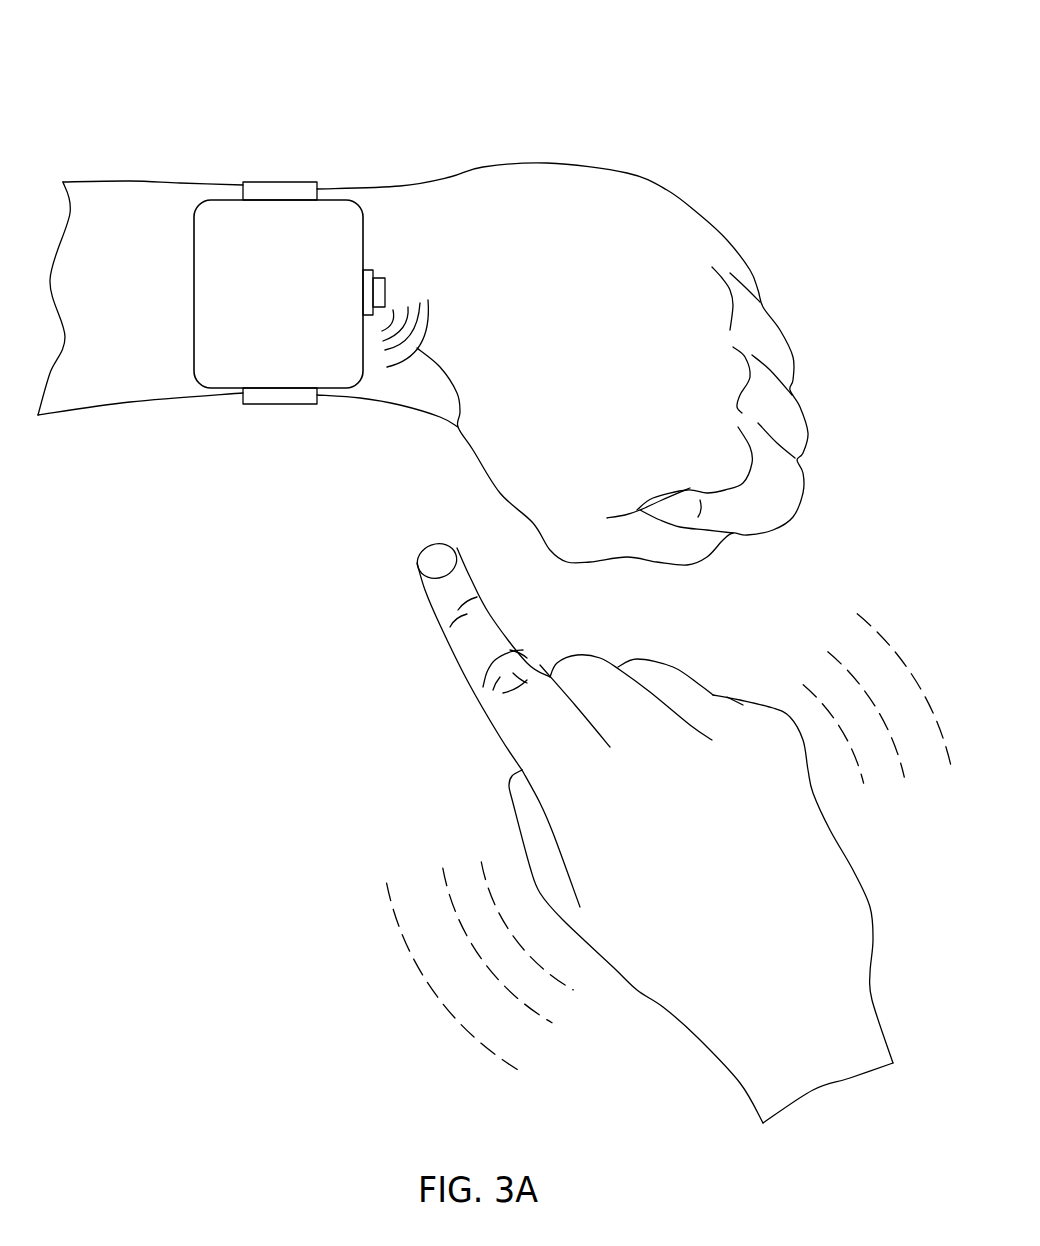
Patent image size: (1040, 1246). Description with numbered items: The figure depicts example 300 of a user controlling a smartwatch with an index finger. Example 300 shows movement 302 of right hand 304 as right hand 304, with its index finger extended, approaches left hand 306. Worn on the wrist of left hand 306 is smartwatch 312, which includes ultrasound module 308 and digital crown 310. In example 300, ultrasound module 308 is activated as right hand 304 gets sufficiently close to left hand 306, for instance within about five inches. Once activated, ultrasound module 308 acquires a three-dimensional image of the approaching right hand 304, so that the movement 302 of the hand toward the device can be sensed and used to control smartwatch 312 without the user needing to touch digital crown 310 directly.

The example 300 is at (214, 87).
The movement 302 is at (425, 977).
The right hand 304 is at (500, 727).
The left hand 306 is at (667, 191).
The ultrasound module 308 is at (458, 427).
The digital crown 310 is at (385, 284).
The smartwatch 312 is at (363, 234).